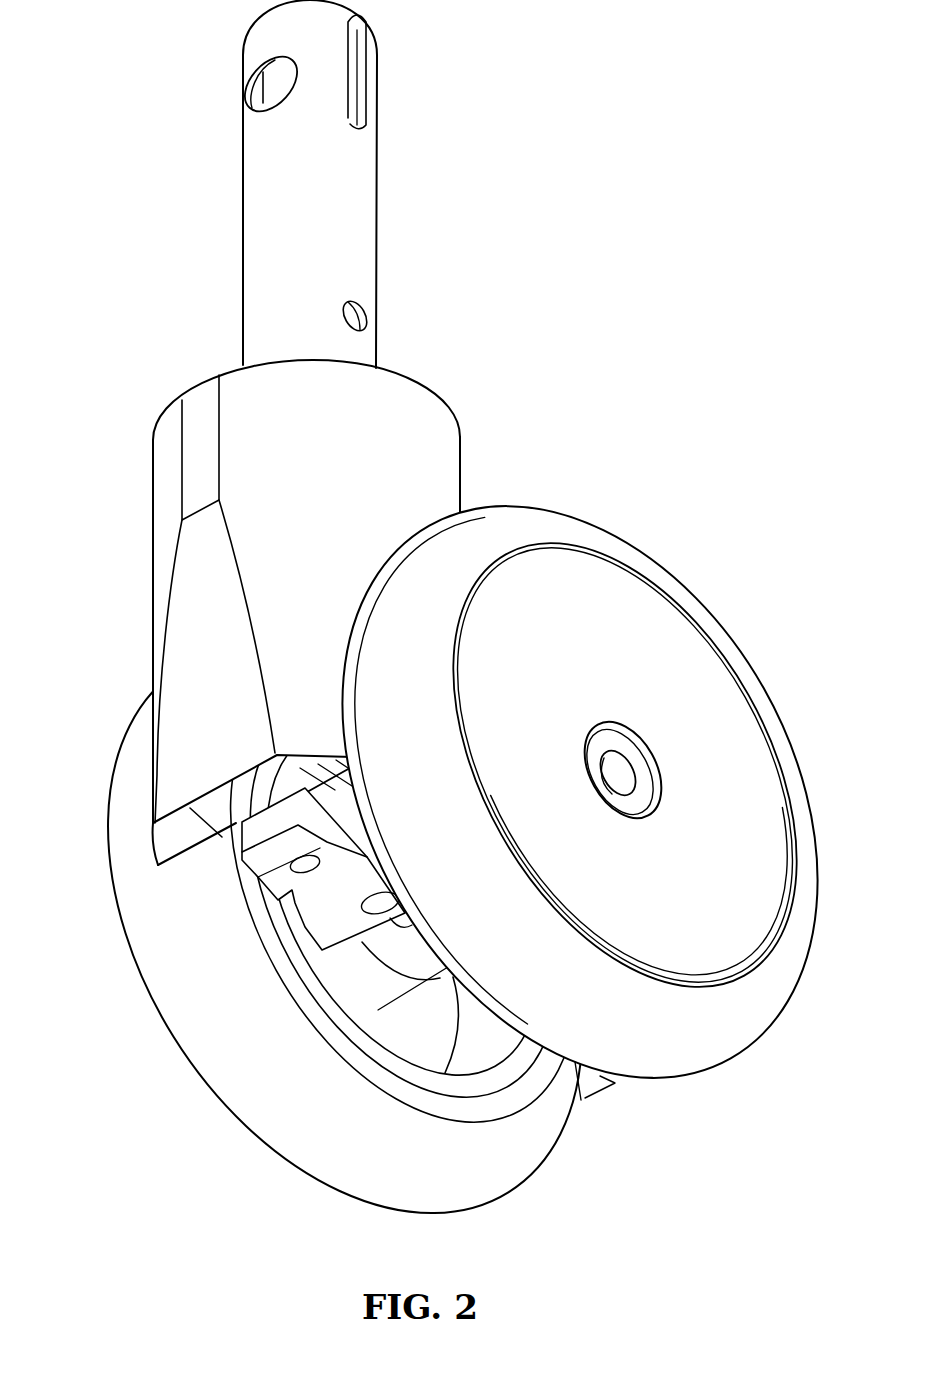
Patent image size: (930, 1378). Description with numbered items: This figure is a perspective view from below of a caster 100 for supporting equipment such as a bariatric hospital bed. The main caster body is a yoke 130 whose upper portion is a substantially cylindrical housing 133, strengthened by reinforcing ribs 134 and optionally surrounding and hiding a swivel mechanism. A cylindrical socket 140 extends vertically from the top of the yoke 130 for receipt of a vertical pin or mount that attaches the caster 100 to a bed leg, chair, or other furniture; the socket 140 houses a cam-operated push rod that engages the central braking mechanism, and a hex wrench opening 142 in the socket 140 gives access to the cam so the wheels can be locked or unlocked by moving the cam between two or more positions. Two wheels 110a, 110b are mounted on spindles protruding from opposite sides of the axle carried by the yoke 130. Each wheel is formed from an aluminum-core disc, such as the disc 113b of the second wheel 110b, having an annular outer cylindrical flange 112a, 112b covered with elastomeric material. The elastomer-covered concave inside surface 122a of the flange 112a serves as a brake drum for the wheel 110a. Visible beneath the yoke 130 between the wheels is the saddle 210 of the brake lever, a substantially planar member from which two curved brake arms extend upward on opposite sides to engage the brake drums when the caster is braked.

The caster 100 is at (706, 262).
The wheel 110a is at (345, 930).
The wheel 110b is at (580, 792).
The annular outer cylindrical flange 112a is at (151, 996).
The annular outer cylindrical flange 112b is at (763, 1003).
The aluminum-core disc 113b is at (688, 698).
The inside surface of annular flange 122a is at (479, 1043).
The yoke 130 is at (293, 612).
The cylindrical housing 133 is at (434, 401).
The reinforcing ribs 134 is at (183, 655).
The cylindrical socket 140 is at (267, 184).
The hex wrench opening 142 is at (257, 88).
The saddle 210 is at (328, 895).